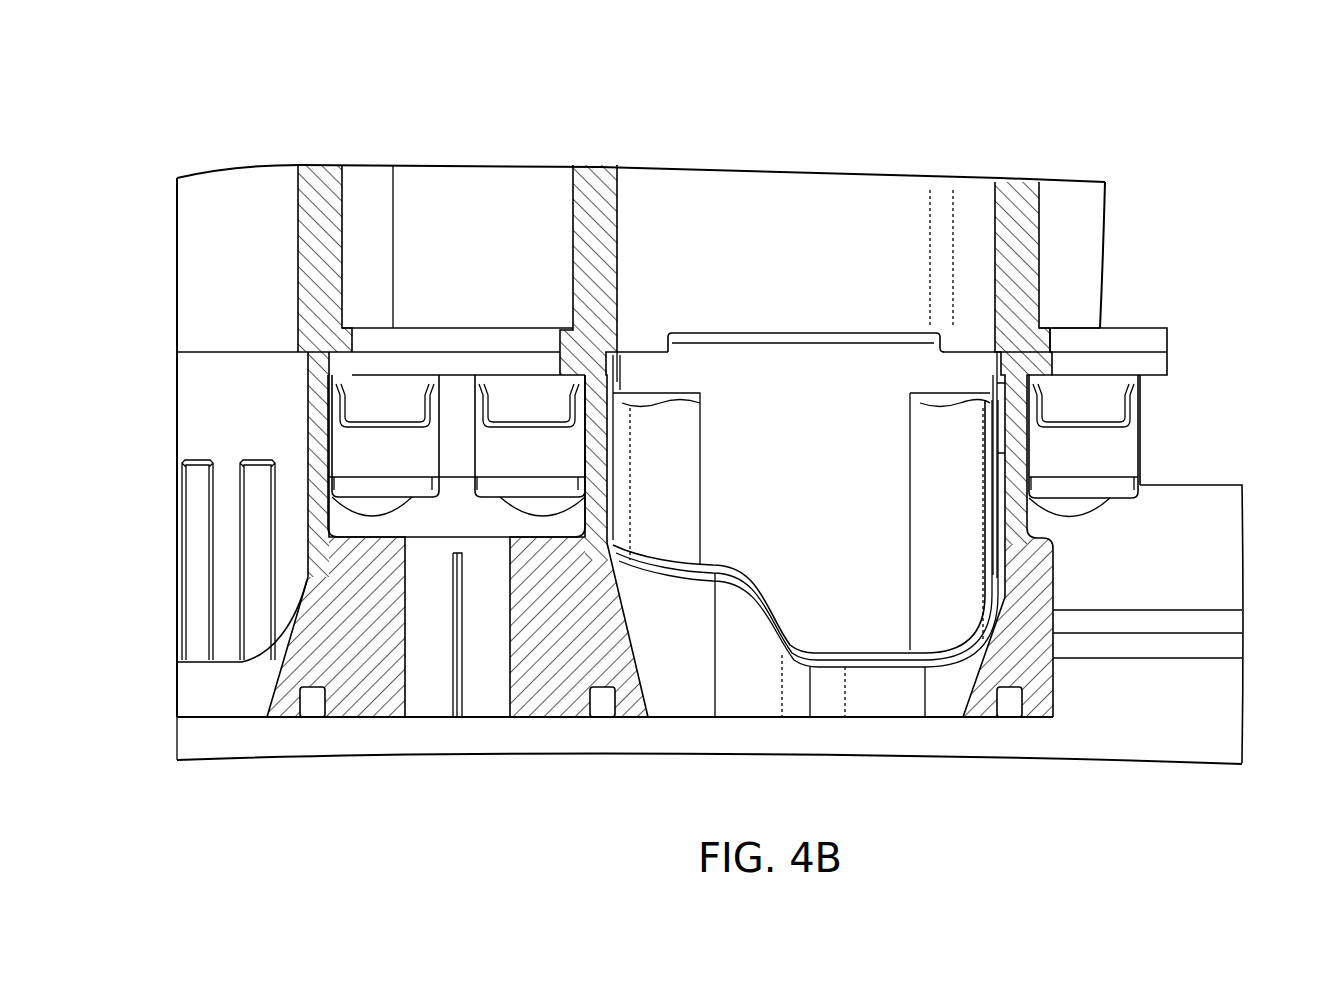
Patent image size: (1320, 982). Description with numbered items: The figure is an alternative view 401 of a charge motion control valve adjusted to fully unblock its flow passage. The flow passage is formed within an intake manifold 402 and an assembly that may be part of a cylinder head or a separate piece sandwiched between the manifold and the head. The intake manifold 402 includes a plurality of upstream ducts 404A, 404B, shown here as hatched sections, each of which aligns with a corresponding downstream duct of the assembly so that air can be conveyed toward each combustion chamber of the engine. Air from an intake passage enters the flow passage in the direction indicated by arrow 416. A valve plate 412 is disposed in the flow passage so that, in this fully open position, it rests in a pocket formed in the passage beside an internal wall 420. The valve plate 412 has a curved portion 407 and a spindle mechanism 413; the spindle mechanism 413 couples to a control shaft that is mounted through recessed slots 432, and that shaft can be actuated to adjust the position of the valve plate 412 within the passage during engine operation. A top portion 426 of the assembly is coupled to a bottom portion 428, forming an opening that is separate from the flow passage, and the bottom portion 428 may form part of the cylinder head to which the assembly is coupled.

The alternative view 401 is at (104, 131).
The intake manifold 402 is at (473, 162).
The upstream duct 404A is at (1017, 186).
The upstream duct 404B is at (323, 168).
The curved portion 407 is at (713, 573).
The valve plate 412 is at (848, 378).
The spindle mechanism 413 is at (1017, 403).
The arrow 416 is at (801, 150).
The internal wall 420 is at (218, 432).
The top portion 426 is at (1225, 598).
The bottom portion 428 is at (1112, 743).
The recessed slot 432 is at (403, 483).